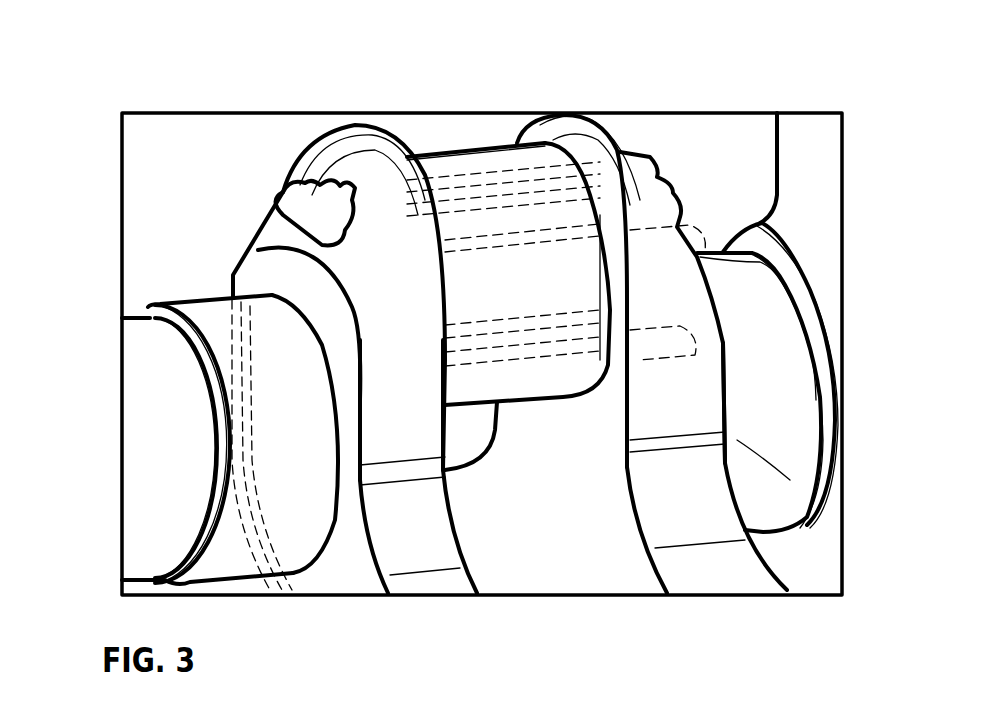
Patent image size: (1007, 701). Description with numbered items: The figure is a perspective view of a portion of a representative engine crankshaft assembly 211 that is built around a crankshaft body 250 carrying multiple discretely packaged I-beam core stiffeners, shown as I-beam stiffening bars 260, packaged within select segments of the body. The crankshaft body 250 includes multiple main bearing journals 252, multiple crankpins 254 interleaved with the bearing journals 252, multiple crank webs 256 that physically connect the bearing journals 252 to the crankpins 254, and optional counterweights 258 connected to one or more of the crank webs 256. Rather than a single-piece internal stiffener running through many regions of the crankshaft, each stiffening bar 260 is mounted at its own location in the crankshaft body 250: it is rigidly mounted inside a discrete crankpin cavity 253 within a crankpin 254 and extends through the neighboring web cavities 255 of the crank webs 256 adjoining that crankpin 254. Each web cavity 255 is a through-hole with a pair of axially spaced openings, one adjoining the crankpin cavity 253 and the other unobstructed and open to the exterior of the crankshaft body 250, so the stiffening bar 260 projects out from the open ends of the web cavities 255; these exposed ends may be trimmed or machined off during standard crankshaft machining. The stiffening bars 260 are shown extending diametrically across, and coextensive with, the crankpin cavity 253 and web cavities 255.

The engine crankshaft assembly 211 is at (803, 88).
The crankshaft body 250 is at (145, 316).
The main bearing journal 252 is at (197, 315).
The crankpin cavity 253 is at (425, 175).
The crankpin 254 is at (503, 157).
The web cavity 255 is at (320, 183).
The crank web 256 is at (340, 147).
The counterweight 258 is at (355, 578).
The I-beam stiffening bar 260 is at (475, 166).